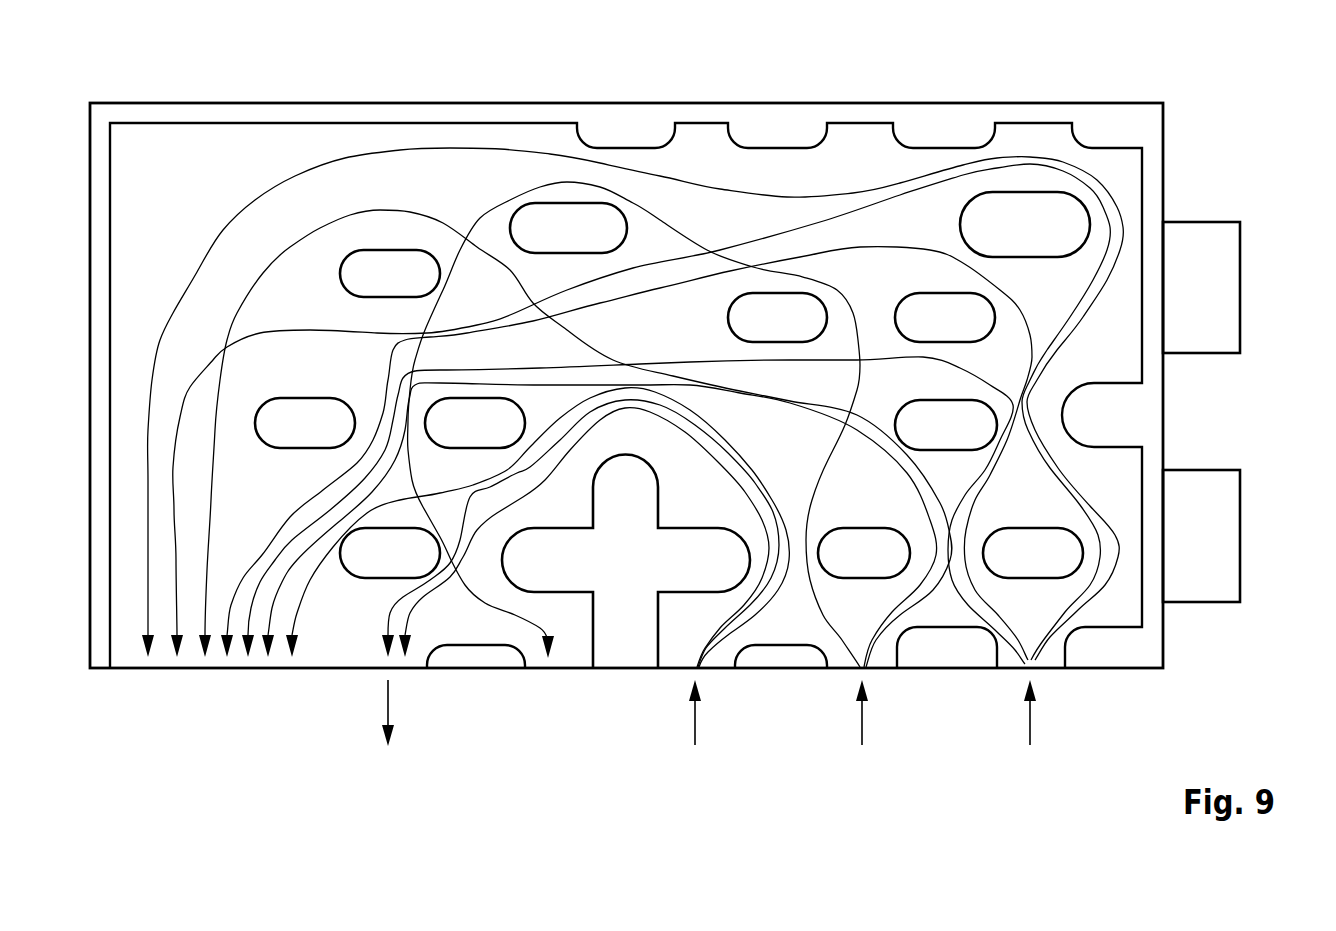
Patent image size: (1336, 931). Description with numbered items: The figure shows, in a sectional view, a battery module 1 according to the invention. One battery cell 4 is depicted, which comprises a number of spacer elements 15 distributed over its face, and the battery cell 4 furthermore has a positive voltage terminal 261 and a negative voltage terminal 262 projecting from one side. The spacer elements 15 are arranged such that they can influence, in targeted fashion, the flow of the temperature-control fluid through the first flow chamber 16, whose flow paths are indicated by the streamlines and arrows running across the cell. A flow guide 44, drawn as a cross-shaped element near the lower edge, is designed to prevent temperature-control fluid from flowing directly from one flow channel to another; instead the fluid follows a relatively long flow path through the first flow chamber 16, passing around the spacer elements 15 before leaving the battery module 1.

The battery module 1 is at (126, 728).
The battery cell 4 is at (230, 104).
The spacer elements 15 is at (553, 217).
The first flow chamber 16 is at (393, 140).
The flow guide 44 is at (627, 656).
The positive voltage terminal 261 is at (1232, 286).
The negative voltage terminal 262 is at (1232, 548).